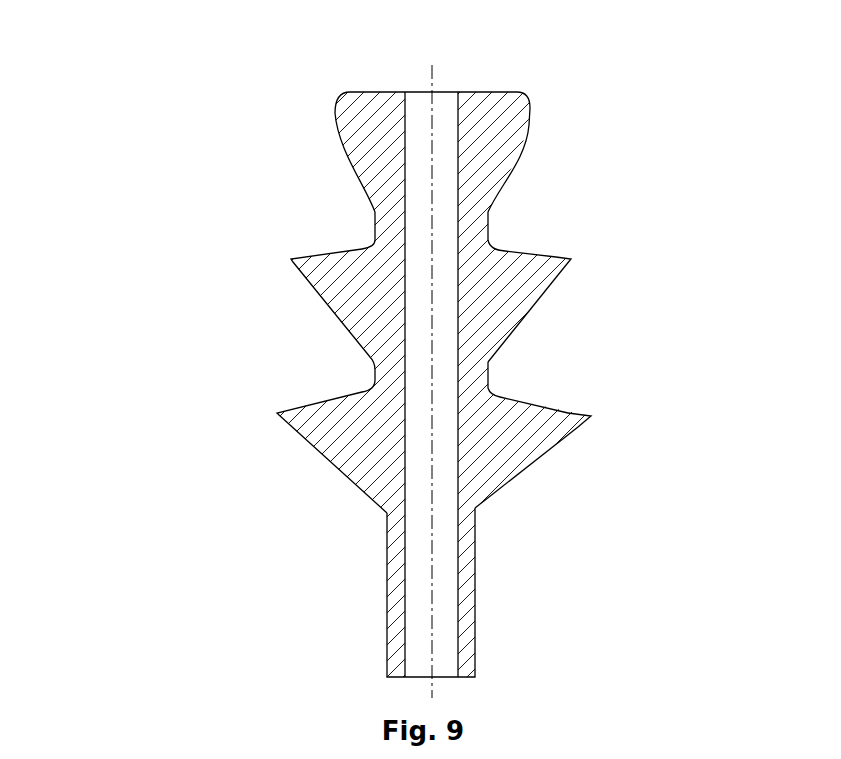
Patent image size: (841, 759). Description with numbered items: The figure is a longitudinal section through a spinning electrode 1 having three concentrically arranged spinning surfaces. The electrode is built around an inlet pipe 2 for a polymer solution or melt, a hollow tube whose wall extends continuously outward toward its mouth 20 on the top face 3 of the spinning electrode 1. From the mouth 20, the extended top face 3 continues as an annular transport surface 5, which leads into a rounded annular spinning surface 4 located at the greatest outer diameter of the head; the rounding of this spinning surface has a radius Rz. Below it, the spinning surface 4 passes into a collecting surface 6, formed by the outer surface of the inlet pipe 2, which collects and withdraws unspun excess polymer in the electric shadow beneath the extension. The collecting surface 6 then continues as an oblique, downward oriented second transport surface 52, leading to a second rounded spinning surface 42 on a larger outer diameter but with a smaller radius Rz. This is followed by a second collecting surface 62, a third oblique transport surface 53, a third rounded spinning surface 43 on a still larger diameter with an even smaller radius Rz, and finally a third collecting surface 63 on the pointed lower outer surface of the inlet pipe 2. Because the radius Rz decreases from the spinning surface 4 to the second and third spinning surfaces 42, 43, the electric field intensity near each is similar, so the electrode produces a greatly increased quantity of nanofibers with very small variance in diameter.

The spinning electrode 1 is at (180, 142).
The inlet pipe 2 is at (390, 650).
The top face 3 is at (335, 85).
The spinning surface 4 is at (532, 107).
The transport surface 5 is at (488, 95).
The collecting surface 6 is at (517, 160).
The mouth 20 is at (425, 105).
The second spinning surface 42 is at (578, 257).
The third spinning surface 43 is at (588, 417).
The second transport surface 52 is at (533, 240).
The third transport surface 53 is at (535, 398).
The second collecting surface 62 is at (513, 333).
The third collecting surface 63 is at (537, 468).
The radius of rounding of the spinning surface Rz is at (388, 130).